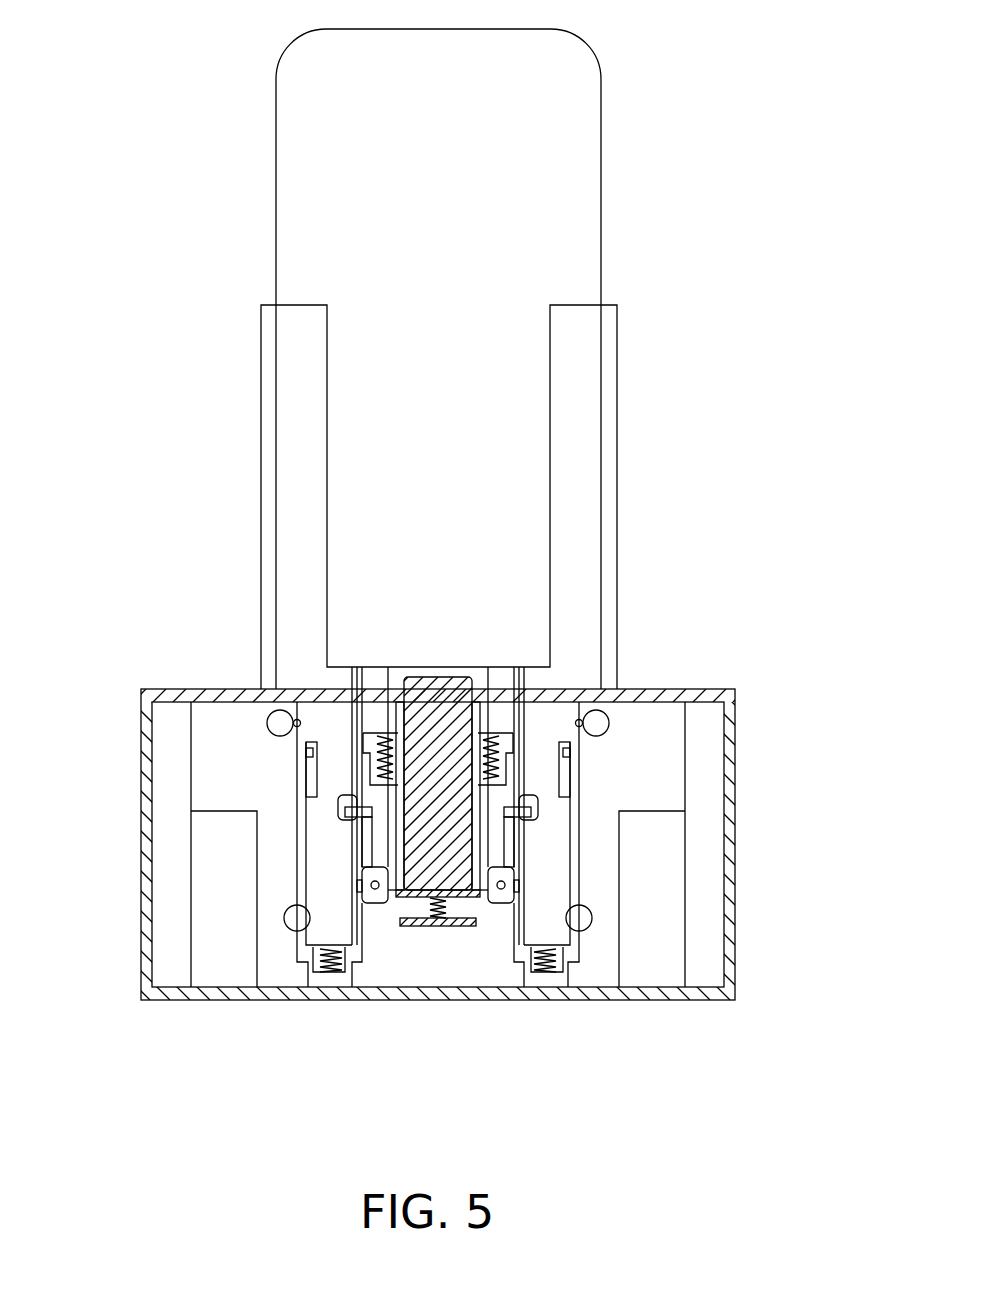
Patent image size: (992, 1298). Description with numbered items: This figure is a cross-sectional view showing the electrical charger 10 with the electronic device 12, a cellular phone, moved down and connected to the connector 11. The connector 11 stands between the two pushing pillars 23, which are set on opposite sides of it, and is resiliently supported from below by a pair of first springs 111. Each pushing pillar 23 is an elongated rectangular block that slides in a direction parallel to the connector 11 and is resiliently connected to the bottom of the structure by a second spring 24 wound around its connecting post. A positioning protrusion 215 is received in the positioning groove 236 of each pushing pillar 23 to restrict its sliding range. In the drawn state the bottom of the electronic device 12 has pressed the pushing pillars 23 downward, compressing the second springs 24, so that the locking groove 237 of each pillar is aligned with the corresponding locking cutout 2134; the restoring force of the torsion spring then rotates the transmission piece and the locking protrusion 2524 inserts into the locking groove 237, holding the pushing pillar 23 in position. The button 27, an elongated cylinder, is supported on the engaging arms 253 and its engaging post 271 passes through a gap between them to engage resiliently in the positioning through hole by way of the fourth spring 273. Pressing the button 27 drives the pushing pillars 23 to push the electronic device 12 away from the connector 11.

The electrical charger 10 is at (155, 663).
The electronic device 12 is at (503, 510).
The connector 11 is at (498, 680).
The first springs 111 is at (497, 735).
The button 27 is at (462, 802).
The engaging post 271 is at (462, 858).
The locking cutout 2134 is at (343, 797).
The positioning protrusion 215 is at (310, 752).
The positioning groove 236 is at (312, 787).
The locking groove 237 is at (340, 808).
The locking protrusion 2524 is at (346, 818).
The pushing pillars 23 is at (323, 932).
The second spring 24 is at (323, 972).
The engaging arm 253 is at (422, 893).
The fourth spring 273 is at (462, 897).